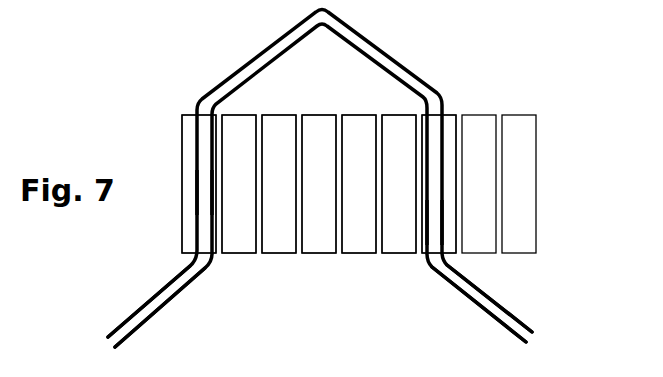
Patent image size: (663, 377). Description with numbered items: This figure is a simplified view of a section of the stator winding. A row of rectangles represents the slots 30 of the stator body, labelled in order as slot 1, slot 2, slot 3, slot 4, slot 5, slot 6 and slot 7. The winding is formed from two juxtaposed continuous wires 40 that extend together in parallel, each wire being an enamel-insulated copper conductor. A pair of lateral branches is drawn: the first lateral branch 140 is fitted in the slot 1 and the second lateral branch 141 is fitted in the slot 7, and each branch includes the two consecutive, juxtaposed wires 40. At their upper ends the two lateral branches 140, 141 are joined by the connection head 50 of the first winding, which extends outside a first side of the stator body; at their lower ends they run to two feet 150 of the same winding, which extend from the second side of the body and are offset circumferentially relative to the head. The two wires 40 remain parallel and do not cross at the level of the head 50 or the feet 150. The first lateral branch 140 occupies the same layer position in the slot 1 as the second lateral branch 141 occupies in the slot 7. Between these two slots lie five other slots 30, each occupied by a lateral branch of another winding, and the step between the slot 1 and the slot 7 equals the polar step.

The slot 30 is at (359, 205).
The continuous wire 40 is at (320, 185).
The connection head 50 is at (320, 174).
The first lateral branch 140 is at (170, 203).
The second lateral branch 141 is at (410, 250).
The connection foot 150 is at (320, 306).
The slot 1 is at (198, 175).
The slot 2 is at (239, 175).
The slot 3 is at (279, 175).
The slot 4 is at (319, 175).
The slot 5 is at (359, 175).
The slot 6 is at (399, 175).
The slot 7 is at (439, 175).